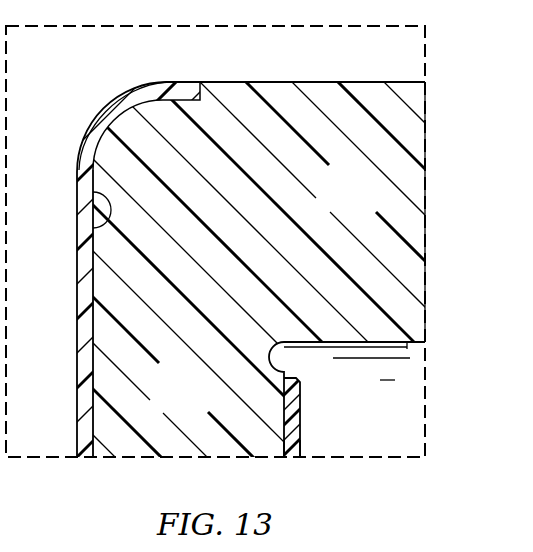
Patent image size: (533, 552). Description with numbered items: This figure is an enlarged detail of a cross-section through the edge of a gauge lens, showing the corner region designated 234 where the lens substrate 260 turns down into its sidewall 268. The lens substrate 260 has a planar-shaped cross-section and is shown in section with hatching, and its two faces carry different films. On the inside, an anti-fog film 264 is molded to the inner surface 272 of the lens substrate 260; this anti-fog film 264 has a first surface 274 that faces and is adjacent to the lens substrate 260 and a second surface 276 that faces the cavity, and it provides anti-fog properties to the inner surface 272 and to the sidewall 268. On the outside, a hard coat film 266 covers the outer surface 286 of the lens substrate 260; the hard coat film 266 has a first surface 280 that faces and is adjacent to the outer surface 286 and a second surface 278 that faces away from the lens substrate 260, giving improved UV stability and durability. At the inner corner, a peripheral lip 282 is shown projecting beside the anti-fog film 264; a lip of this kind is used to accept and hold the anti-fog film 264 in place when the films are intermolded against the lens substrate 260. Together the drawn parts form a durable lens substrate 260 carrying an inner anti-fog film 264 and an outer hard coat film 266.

The fastener assembly / seal assembly 234 is at (415, 407).
The lens substrate 260 is at (204, 398).
The anti-fog film 264 is at (302, 425).
The hard coat film 266 is at (78, 164).
The sidewall 268 is at (371, 198).
The inner surface 272 is at (407, 347).
The first surface 274 is at (283, 443).
The second surface 276 is at (304, 446).
The second surface 278 is at (77, 340).
The first surface 280 is at (91, 229).
The peripheral lip 282 is at (303, 362).
The outer surface 286 is at (278, 82).